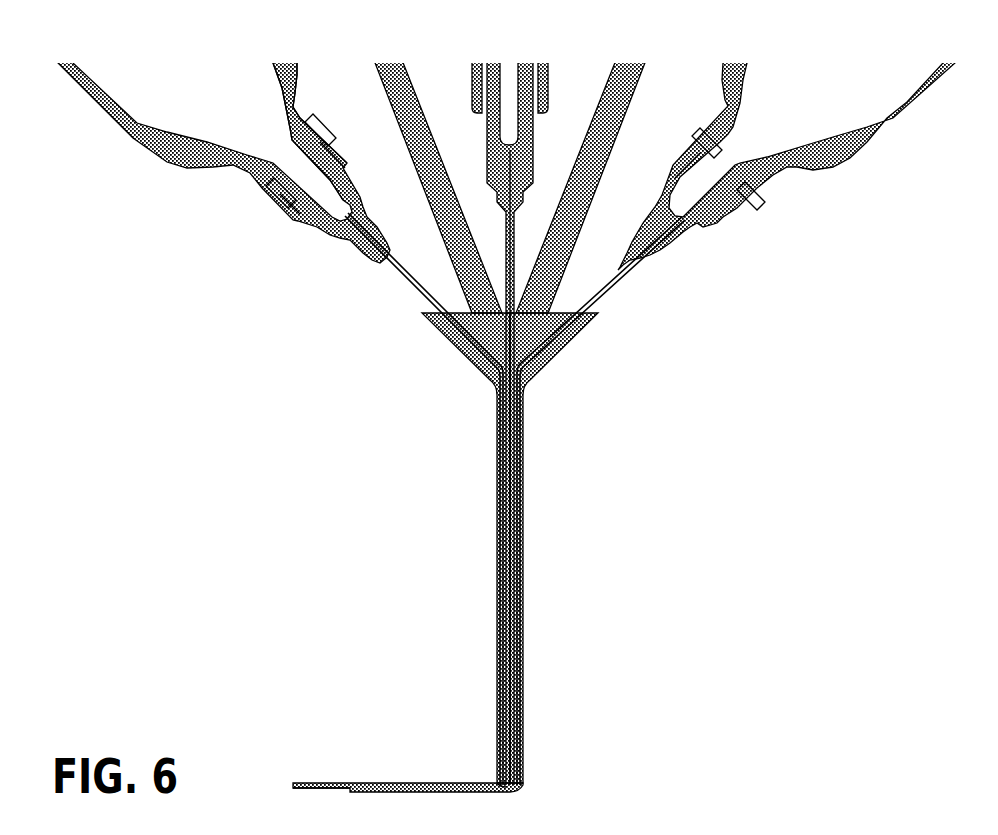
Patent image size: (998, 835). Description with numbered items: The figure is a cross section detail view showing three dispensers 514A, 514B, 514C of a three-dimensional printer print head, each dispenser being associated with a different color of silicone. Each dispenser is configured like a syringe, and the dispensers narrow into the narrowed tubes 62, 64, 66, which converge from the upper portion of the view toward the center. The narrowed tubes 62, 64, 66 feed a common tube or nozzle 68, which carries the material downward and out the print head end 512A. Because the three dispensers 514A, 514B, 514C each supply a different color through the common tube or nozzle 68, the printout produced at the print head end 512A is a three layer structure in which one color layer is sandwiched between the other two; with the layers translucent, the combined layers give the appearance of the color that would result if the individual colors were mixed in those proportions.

The print head end 512A is at (523, 758).
The dispenser 514A is at (260, 167).
The dispenser 514B is at (678, 242).
The dispenser 514C is at (497, 196).
The narrowed tube 62 is at (612, 285).
The narrowed tube 64 is at (516, 256).
The narrowed tube 66 is at (477, 362).
The common tube or nozzle 68 is at (562, 345).